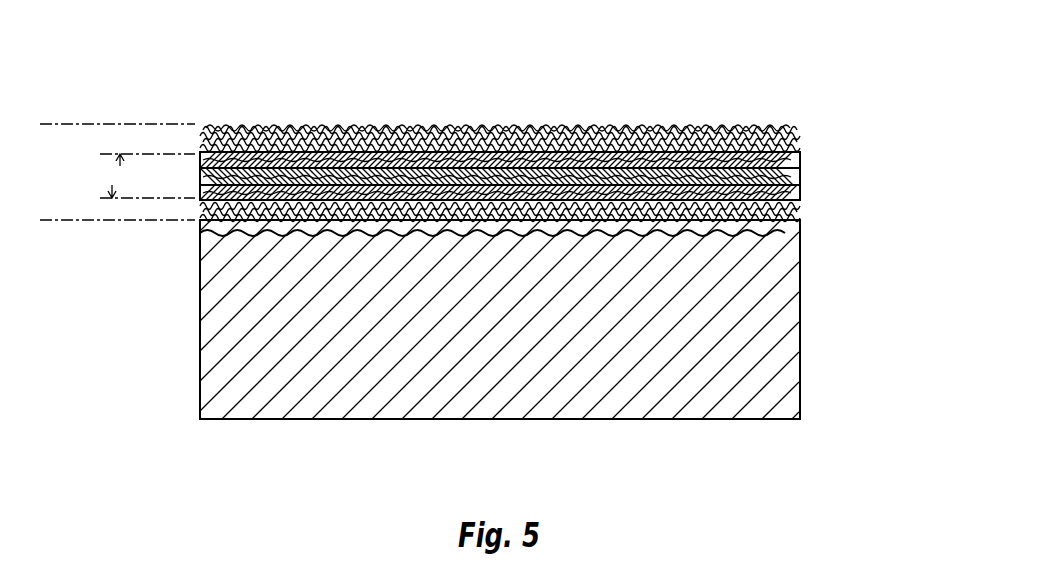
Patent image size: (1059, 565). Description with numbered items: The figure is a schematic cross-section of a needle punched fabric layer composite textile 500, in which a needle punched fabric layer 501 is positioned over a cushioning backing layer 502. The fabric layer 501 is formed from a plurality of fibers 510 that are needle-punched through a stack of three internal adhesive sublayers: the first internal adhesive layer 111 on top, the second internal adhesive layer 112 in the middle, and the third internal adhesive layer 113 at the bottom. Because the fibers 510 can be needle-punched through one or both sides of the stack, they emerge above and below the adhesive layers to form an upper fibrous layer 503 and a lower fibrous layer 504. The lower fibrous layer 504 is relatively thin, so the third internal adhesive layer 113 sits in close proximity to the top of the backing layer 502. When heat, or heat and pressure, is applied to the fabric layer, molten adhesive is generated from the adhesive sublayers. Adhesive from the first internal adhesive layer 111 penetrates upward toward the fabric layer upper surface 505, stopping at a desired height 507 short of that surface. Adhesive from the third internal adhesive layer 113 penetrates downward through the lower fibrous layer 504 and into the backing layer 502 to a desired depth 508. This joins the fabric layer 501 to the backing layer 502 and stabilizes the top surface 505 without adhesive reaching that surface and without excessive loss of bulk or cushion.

The needle punched fabric layer composite textile 500 is at (810, 76).
The needle punched fabric layer 501 is at (65, 124).
The backing layer 502 is at (195, 419).
The upper fibrous layer 503 is at (125, 116).
The lower fibrous layer 504 is at (116, 228).
The fabric layer upper surface 505 is at (498, 128).
The desired height 507 is at (667, 128).
The desired depth 508 is at (760, 236).
The fibers 510 is at (236, 130).
The first internal adhesive layer 111 is at (800, 158).
The second internal adhesive layer 112 is at (800, 173).
The third internal adhesive layer 113 is at (800, 188).